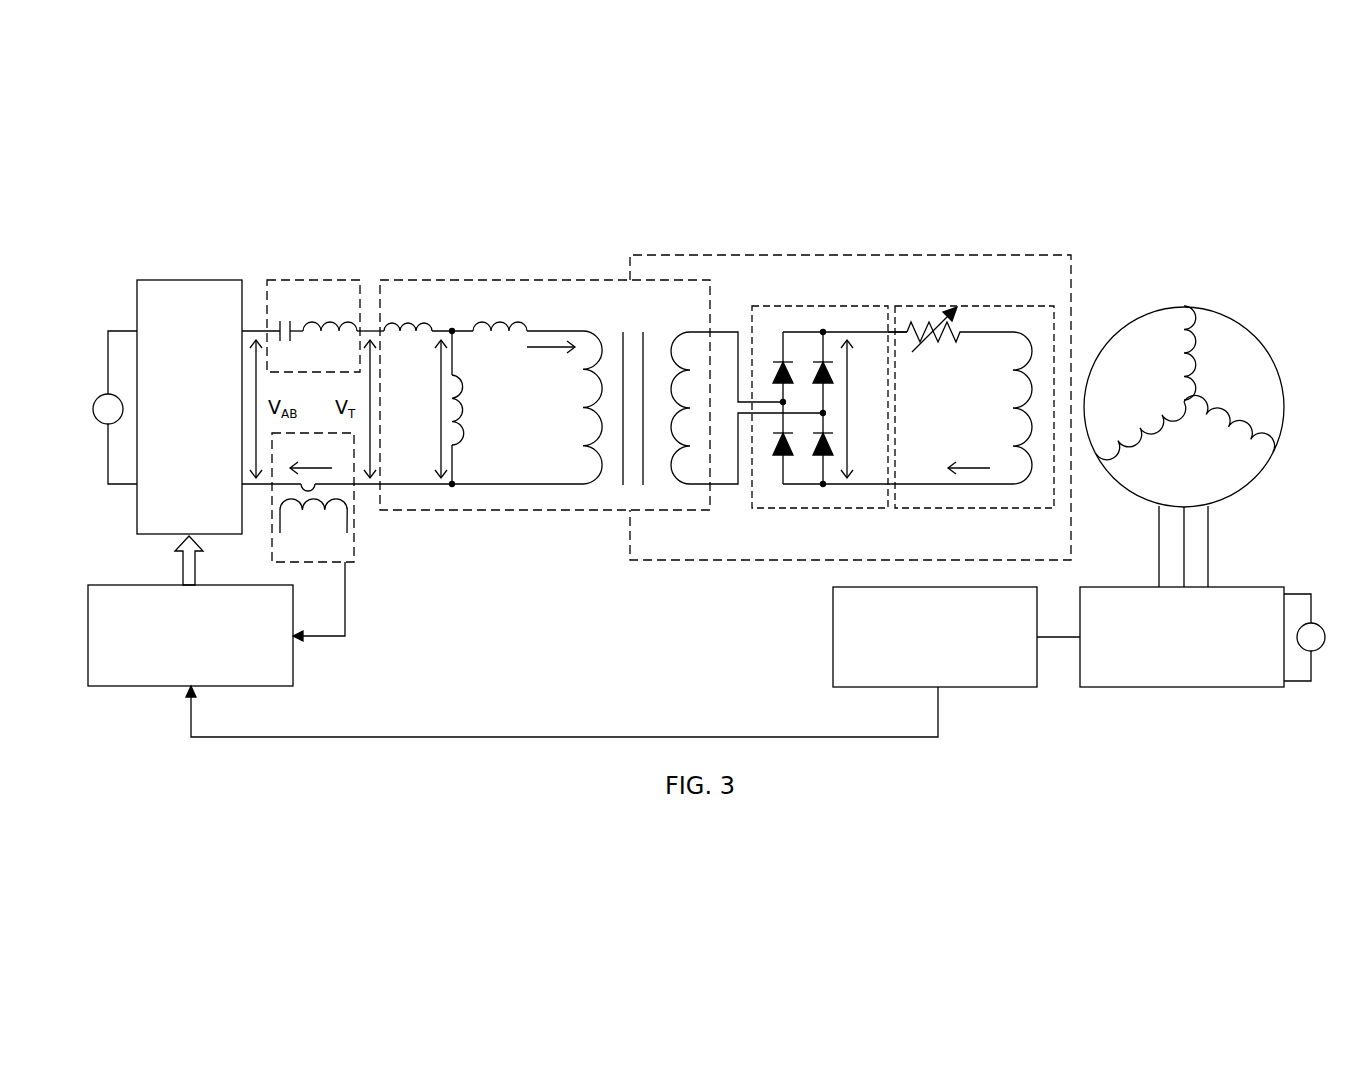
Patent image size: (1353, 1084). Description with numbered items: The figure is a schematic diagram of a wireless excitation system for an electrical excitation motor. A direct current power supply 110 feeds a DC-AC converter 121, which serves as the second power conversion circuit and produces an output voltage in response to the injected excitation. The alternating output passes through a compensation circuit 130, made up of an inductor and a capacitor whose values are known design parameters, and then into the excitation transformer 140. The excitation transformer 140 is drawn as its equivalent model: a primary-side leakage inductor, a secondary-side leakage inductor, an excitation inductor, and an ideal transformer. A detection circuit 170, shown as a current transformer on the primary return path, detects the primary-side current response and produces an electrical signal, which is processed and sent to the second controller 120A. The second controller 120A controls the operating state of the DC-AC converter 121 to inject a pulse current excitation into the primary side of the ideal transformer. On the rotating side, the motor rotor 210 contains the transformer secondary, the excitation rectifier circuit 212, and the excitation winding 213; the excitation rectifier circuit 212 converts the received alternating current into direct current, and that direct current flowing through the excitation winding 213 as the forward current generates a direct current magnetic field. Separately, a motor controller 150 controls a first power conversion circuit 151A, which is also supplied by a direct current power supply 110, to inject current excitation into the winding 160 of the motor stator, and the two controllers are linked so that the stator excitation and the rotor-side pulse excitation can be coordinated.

The direct current power supply 110 is at (98, 394).
The DC-AC converter 121 is at (192, 282).
The compensation circuit 130 is at (313, 282).
The excitation transformer 140 is at (545, 510).
The detection circuit 170 is at (349, 562).
The motor rotor 210 is at (850, 388).
The excitation rectifier circuit 212 is at (798, 305).
The excitation winding 213 is at (968, 305).
The winding of a motor stator 160 is at (1177, 305).
The motor controller 150 is at (1038, 598).
The first power conversion circuit 151A is at (1232, 585).
The second controller 120A is at (108, 583).